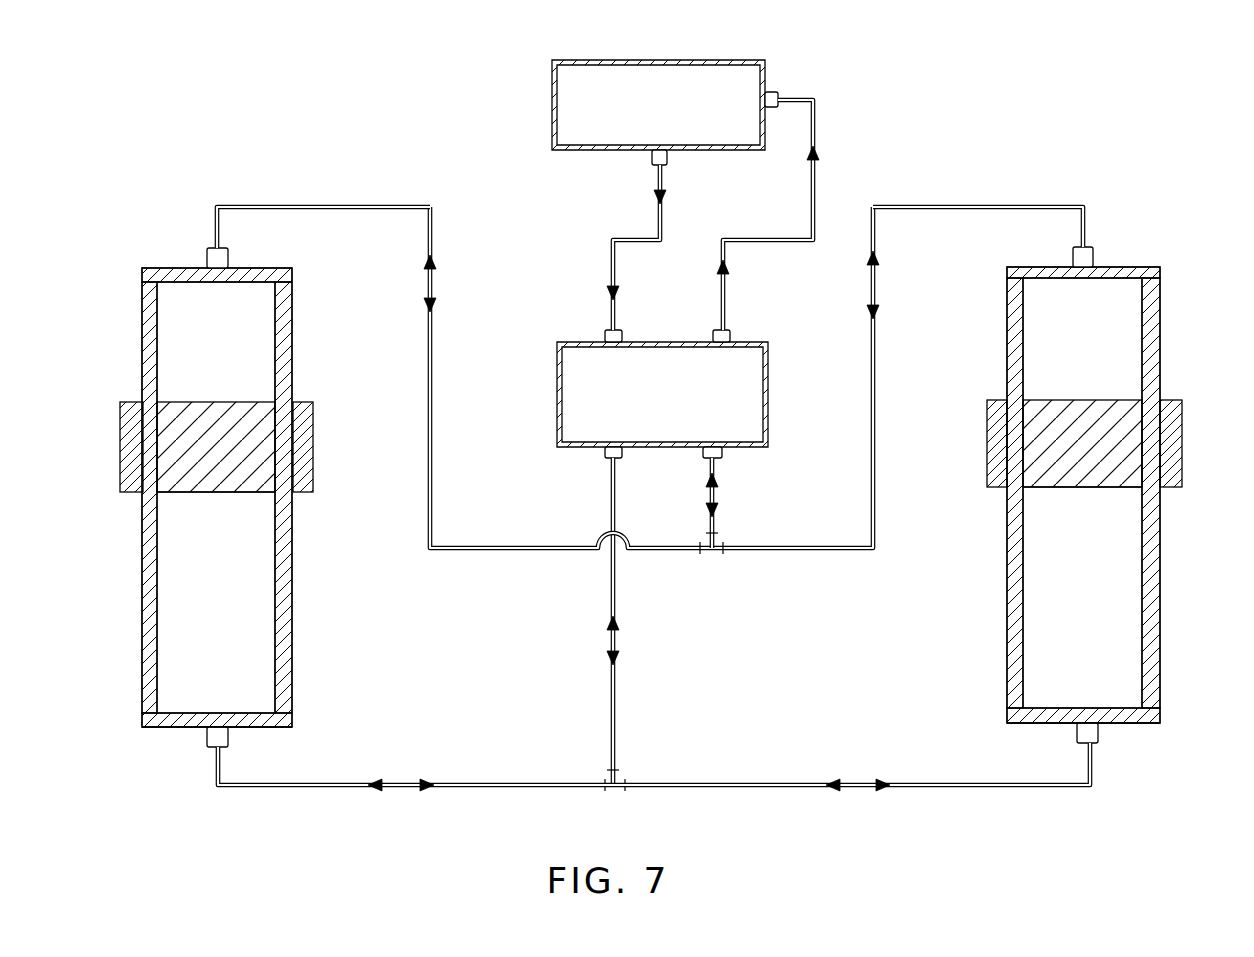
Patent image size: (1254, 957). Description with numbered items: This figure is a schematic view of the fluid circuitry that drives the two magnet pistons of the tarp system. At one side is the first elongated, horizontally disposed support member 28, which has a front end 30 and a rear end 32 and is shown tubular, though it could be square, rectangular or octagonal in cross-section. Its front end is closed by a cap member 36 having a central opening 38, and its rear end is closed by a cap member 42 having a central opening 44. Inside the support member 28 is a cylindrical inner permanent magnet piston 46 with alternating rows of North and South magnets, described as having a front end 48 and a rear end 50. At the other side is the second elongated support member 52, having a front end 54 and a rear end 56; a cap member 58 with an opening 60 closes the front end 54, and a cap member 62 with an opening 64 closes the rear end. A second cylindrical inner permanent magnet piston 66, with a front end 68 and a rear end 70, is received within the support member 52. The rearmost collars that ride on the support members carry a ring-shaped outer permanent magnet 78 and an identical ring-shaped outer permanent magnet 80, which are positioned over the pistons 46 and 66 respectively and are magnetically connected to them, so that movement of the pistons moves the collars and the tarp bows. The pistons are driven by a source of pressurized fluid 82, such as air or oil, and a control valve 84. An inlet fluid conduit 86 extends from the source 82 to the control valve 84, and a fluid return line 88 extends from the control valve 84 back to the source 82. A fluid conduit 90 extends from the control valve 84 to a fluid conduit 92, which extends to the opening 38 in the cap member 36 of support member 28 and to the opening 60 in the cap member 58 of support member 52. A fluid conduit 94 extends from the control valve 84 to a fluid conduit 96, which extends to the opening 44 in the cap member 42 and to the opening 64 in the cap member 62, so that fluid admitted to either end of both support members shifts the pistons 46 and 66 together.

The first support member 28 is at (1122, 470).
The front end 30 is at (1086, 455).
The rear end 32 is at (1125, 735).
The cap member 36 is at (1115, 268).
The central opening 38 is at (1073, 250).
The cap member 42 is at (1133, 700).
The central opening 44 is at (1075, 730).
The cylindrical inner permanent magnet piston 46 is at (1106, 500).
The front end 48 is at (1090, 399).
The rear end 50 is at (1065, 488).
The second support member 52 is at (282, 497).
The front end 54 is at (257, 452).
The rear end 56 is at (187, 753).
The cap member 58 is at (258, 283).
The opening 60 is at (230, 252).
The cap member 62 is at (245, 712).
The opening 64 is at (230, 737).
The cylindrical inner permanent magnet piston 66 is at (300, 362).
The front end 68 is at (216, 402).
The rear end 70 is at (230, 493).
The ring-shaped outer permanent magnet 78 is at (1180, 440).
The ring-shaped outer permanent magnet 80 is at (312, 445).
The source of pressurized fluid 82 is at (651, 114).
The control valve 84 is at (645, 402).
The inlet fluid conduit 86 is at (652, 218).
The fluid return line 88 is at (818, 172).
The fluid conduit 90 is at (722, 494).
The fluid conduit 92 is at (835, 552).
The fluid conduit 94 is at (620, 705).
The fluid conduit 96 is at (740, 780).